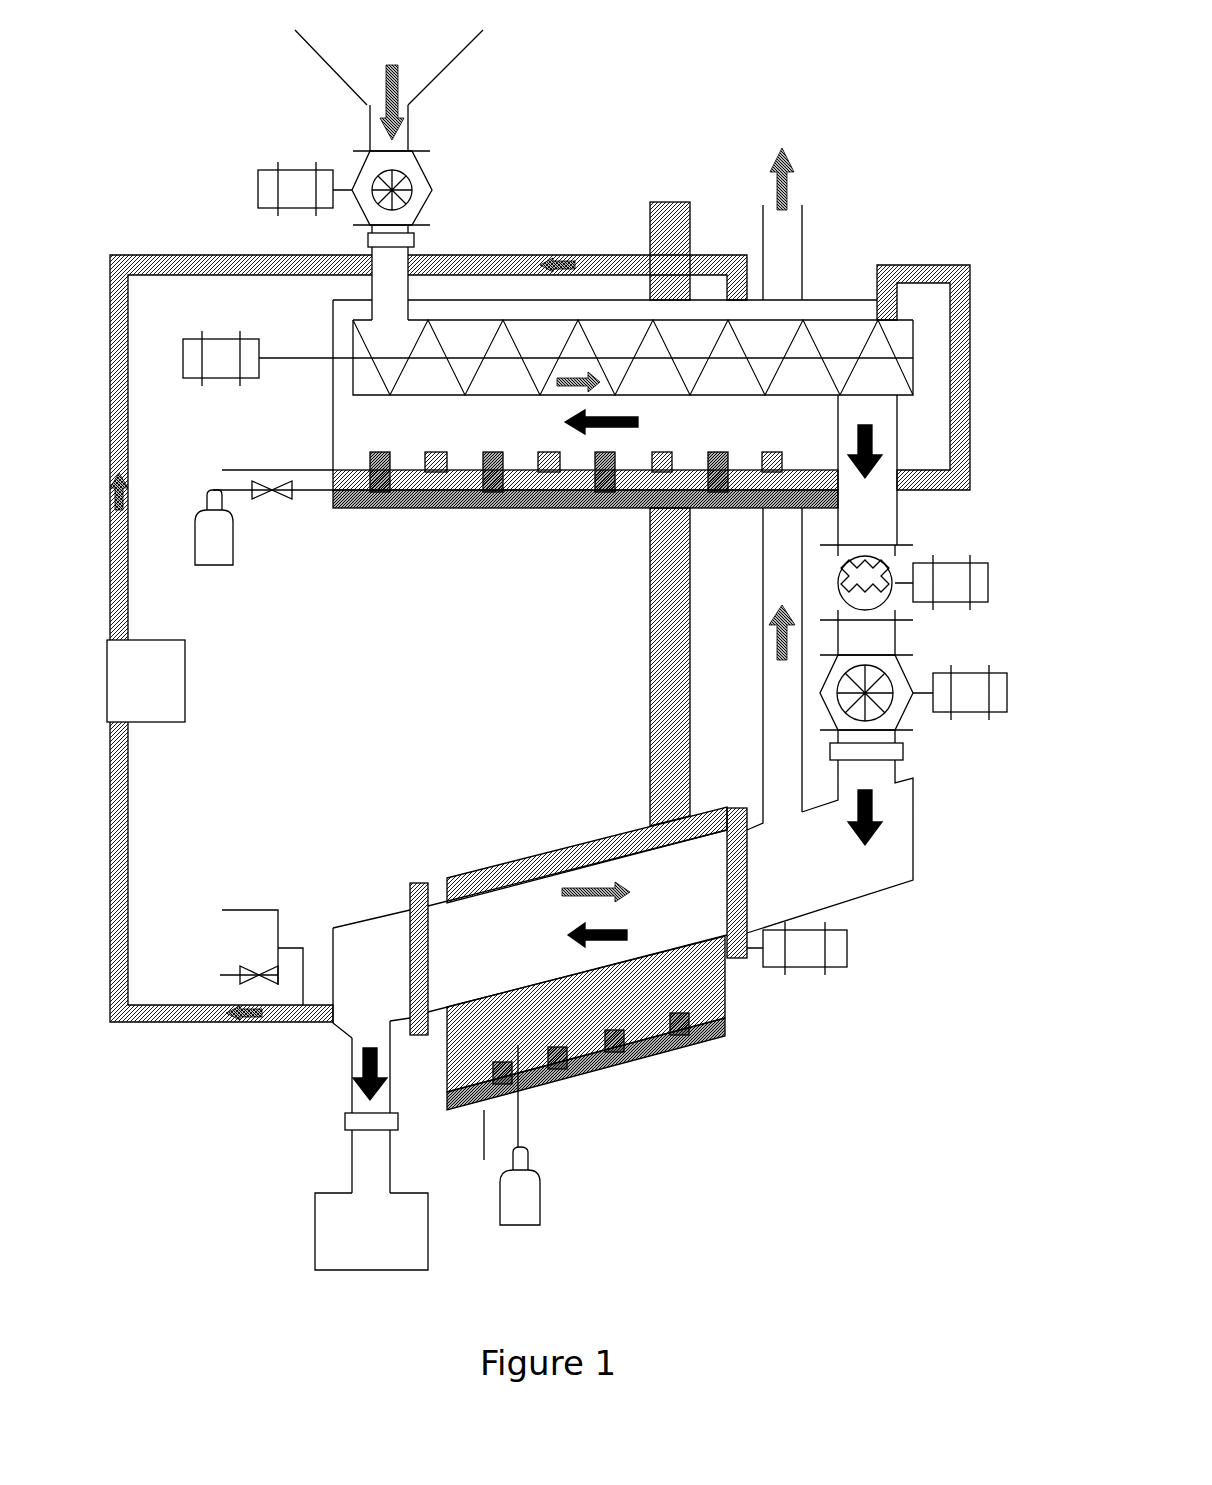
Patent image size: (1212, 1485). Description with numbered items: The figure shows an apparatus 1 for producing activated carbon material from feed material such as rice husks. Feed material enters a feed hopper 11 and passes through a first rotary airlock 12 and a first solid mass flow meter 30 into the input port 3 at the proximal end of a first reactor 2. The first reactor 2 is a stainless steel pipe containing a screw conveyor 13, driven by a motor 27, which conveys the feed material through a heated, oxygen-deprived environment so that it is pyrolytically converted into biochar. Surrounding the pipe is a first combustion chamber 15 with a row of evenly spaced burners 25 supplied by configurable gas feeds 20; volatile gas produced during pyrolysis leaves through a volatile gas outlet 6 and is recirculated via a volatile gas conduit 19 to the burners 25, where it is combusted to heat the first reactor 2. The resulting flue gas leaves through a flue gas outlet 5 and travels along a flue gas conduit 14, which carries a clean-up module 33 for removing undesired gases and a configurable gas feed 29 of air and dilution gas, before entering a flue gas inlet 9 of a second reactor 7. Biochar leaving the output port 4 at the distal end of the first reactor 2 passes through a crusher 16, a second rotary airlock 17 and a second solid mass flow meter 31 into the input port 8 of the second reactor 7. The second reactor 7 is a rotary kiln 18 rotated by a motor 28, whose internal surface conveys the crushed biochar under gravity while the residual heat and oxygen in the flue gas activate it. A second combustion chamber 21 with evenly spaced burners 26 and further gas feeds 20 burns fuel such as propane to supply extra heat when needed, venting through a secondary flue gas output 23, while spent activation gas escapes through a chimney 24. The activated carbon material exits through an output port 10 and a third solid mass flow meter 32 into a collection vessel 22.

The apparatus 1 is at (792, 45).
The first reactor 2 is at (478, 316).
The input port 3 is at (408, 320).
The output port 4 is at (895, 414).
The flue gas outlet 5 is at (748, 288).
The volatile gas outlet 6 is at (896, 322).
The second reactor 7 is at (699, 916).
The input port 8 is at (898, 790).
The flue gas inlet 9 is at (333, 1030).
The output port 10 is at (352, 1050).
The feed hopper 11 is at (410, 125).
The first rotary airlock 12 is at (312, 203).
The screw conveyor 13 is at (472, 397).
The flue gas conduit 14 is at (130, 800).
The first combustion chamber 15 is at (333, 413).
The crusher 16 is at (967, 597).
The second rotary airlock 17 is at (986, 707).
The rotary kiln 18 is at (748, 892).
The volatile gas conduit 19 is at (972, 356).
The gas feeds 20 is at (236, 556).
The second combustion chamber 21 is at (560, 1033).
The collection vessel 22 is at (389, 1177).
The secondary flue gas output 23 is at (690, 203).
The chimney 24 is at (795, 176).
The burners 25 is at (392, 478).
The burners 26 is at (497, 1070).
The motor 27 is at (238, 372).
The motor 28 is at (821, 963).
The gas feed 29 is at (278, 912).
The meter 30 is at (415, 240).
The meter 31 is at (903, 746).
The meter 32 is at (345, 1125).
The module 33 is at (187, 686).